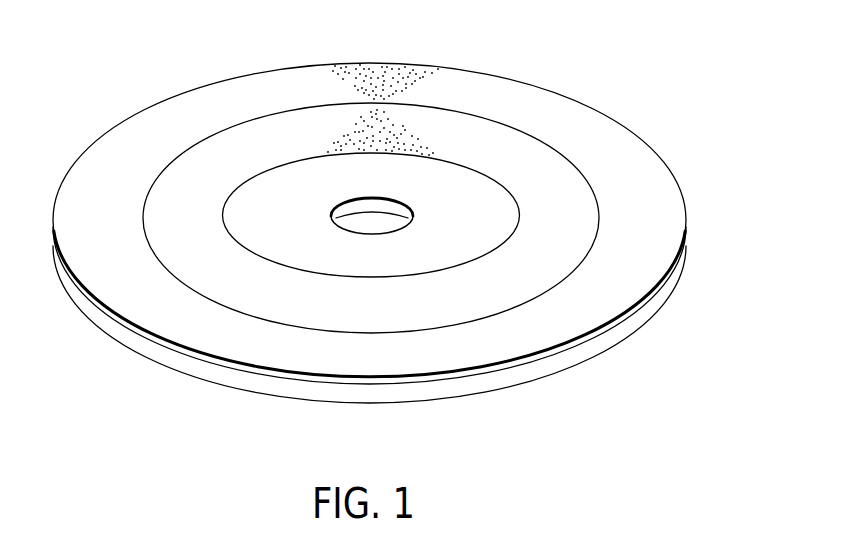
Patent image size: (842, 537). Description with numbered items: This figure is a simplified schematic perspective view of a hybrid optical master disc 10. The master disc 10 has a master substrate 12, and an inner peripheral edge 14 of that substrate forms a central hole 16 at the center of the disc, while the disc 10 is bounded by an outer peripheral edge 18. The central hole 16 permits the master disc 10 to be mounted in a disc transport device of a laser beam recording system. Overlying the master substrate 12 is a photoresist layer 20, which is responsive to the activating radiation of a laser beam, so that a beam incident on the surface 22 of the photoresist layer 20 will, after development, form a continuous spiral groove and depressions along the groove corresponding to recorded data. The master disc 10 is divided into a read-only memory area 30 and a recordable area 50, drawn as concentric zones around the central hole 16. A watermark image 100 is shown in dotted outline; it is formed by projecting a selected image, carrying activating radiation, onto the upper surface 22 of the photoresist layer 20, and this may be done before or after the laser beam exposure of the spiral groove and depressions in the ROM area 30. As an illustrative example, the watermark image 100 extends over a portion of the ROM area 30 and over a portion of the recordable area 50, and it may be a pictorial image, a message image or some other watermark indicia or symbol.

The hybrid optical master disc 10 is at (583, 84).
The master substrate 12 is at (323, 392).
The inner peripheral edge 14 is at (336, 219).
The central hole 16 is at (392, 203).
The outer peripheral edge 18 is at (57, 200).
The photoresist layer 20 is at (462, 380).
The surface of the photoresist layer 22 is at (667, 202).
The read-only memory (ROM) area 30 is at (352, 317).
The recordable area 50 is at (364, 368).
The watermark image 100 is at (406, 73).